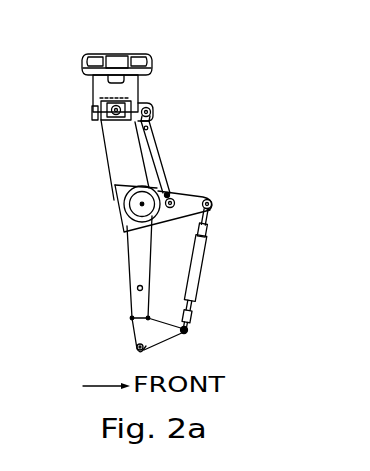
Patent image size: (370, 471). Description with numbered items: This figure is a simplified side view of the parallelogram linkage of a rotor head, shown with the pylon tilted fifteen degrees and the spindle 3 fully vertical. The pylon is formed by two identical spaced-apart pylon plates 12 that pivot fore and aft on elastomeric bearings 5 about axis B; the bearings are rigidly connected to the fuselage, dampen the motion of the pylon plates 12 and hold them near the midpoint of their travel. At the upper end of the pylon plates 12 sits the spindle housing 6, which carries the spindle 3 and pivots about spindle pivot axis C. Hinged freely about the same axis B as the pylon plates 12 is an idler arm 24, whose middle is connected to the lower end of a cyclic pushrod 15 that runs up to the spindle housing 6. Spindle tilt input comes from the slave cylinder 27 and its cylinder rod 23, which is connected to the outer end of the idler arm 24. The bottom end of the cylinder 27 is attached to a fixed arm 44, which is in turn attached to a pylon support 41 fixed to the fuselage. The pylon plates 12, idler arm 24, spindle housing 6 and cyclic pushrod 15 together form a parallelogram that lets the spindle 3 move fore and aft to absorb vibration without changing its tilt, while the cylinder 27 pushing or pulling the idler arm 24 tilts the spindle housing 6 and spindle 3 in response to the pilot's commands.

The spindle 3 is at (147, 58).
The spindle housing 6 is at (140, 88).
The pylon plates 12 is at (107, 160).
The spindle pivot axis C is at (109, 124).
The cyclic pushrods 15 is at (166, 162).
The elastomeric bearings 5 is at (118, 228).
The pivot axis B is at (142, 204).
The idler arm 24 is at (190, 197).
The cylinder rods 23 is at (207, 230).
The slave cylinder 27 is at (203, 276).
The pylon support 41 is at (130, 292).
The arm 44 is at (166, 332).